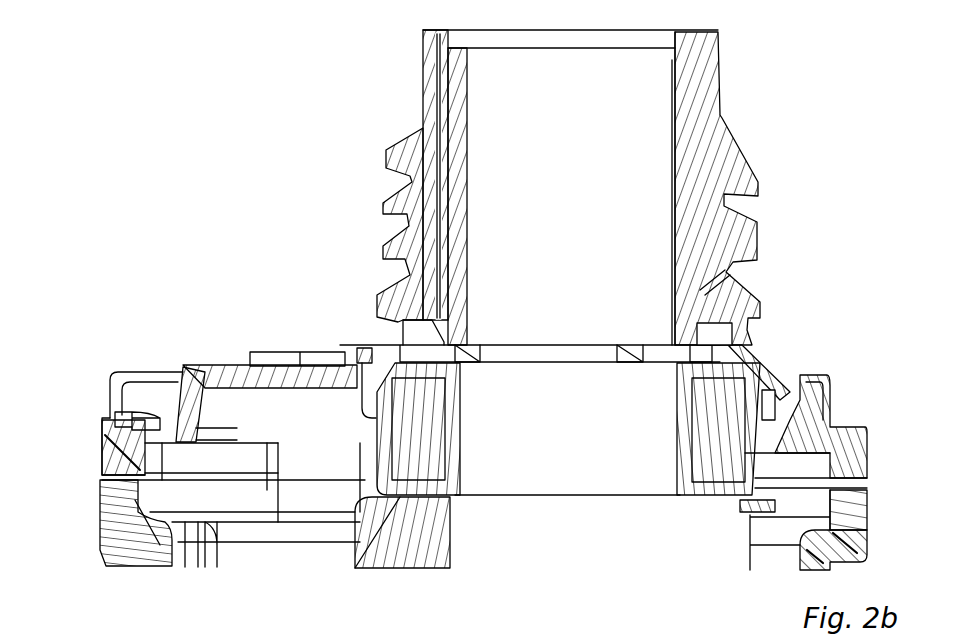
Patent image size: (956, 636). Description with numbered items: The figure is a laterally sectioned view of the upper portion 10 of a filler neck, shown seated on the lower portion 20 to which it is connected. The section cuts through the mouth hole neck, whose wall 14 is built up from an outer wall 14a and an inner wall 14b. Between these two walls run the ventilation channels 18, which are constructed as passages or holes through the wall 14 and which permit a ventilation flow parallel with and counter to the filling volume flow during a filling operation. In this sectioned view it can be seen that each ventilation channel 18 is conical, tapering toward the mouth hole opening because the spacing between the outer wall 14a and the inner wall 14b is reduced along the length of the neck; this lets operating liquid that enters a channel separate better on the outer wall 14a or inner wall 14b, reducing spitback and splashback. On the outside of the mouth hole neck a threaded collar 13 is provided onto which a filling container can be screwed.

The upper portion 10 is at (234, 148).
The threaded collar 13 is at (742, 240).
The wall 14 is at (712, 68).
The outer wall 14a is at (433, 48).
The inner wall 14b is at (458, 84).
The ventilation channels 18 is at (445, 117).
The lower portion 20 is at (112, 520).